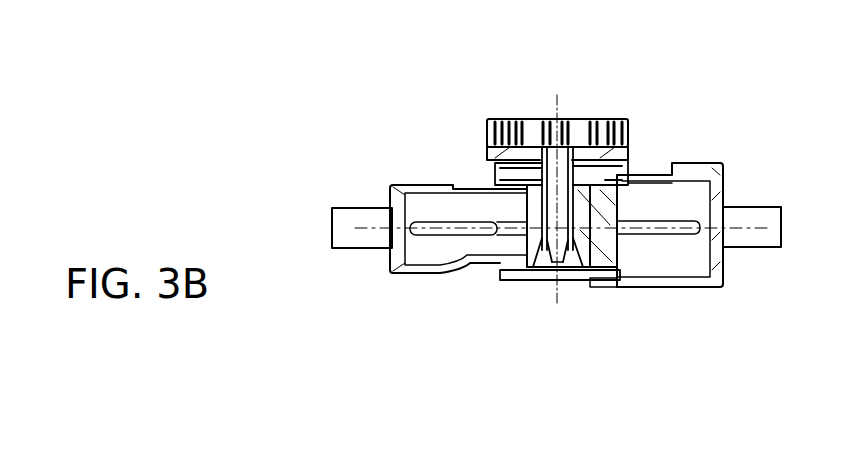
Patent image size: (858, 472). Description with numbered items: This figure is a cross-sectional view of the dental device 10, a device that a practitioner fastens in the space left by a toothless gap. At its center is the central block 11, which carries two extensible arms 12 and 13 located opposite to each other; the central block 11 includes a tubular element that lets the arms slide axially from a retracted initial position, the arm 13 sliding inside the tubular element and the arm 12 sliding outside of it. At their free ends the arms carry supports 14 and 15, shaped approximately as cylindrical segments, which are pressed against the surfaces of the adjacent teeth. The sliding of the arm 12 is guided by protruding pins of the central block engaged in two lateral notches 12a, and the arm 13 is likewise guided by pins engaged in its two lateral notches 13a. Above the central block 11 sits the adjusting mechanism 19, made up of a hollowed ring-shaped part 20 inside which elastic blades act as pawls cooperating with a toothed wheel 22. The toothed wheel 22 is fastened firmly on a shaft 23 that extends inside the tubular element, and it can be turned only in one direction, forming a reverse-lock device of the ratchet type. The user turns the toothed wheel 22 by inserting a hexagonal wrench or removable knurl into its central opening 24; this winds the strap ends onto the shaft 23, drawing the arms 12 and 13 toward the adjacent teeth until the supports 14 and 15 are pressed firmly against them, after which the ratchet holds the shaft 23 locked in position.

The dental device 10 is at (316, 172).
The central block 11 is at (605, 252).
The extensible arm 12 is at (717, 164).
The lateral notches 12a is at (697, 234).
The extensible arm 13 is at (420, 188).
The lateral notches 13a is at (478, 240).
The support 14 is at (355, 244).
The support 15 is at (770, 237).
The adjusting mechanism 19 is at (509, 103).
The hollowed ring-shaped part 20 is at (607, 143).
The toothed wheel 22 is at (548, 255).
The shaft 23 is at (542, 268).
The central opening 24 is at (543, 165).